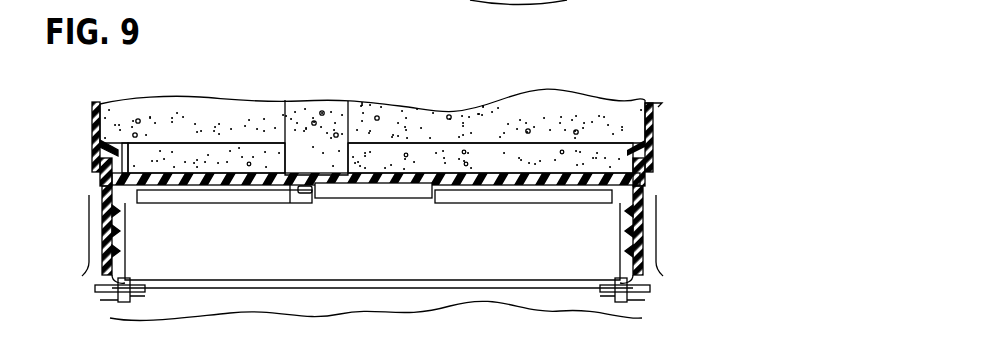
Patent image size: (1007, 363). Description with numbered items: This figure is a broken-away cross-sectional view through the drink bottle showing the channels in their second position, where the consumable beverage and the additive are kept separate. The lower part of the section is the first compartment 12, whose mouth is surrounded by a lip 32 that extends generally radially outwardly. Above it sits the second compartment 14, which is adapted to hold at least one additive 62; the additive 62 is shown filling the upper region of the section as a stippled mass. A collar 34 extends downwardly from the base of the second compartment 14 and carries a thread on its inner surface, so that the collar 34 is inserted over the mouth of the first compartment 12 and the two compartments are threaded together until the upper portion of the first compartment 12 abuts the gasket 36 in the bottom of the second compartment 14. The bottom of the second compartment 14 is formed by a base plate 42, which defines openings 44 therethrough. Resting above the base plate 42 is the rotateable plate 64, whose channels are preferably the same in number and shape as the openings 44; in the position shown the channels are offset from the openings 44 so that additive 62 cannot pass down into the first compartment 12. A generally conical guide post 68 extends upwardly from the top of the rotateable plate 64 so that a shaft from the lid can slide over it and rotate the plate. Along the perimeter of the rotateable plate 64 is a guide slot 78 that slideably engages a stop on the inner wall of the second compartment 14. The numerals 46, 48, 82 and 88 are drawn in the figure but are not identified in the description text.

The first compartment 12 is at (638, 305).
The second compartment 14 is at (655, 127).
The lip 32 is at (100, 290).
The collar 34 is at (645, 238).
The gasket 36 is at (106, 188).
The base plate 42 is at (290, 190).
The openings 44 is at (482, 190).
The fastener 46 is at (303, 193).
The plate 48 is at (317, 187).
The additive 62 is at (507, 115).
The rotateable plate 64 is at (247, 173).
The guide post 68 is at (313, 122).
The guide slot 78 is at (97, 152).
The corner piece 82 is at (97, 178).
The wedge 88 is at (107, 148).